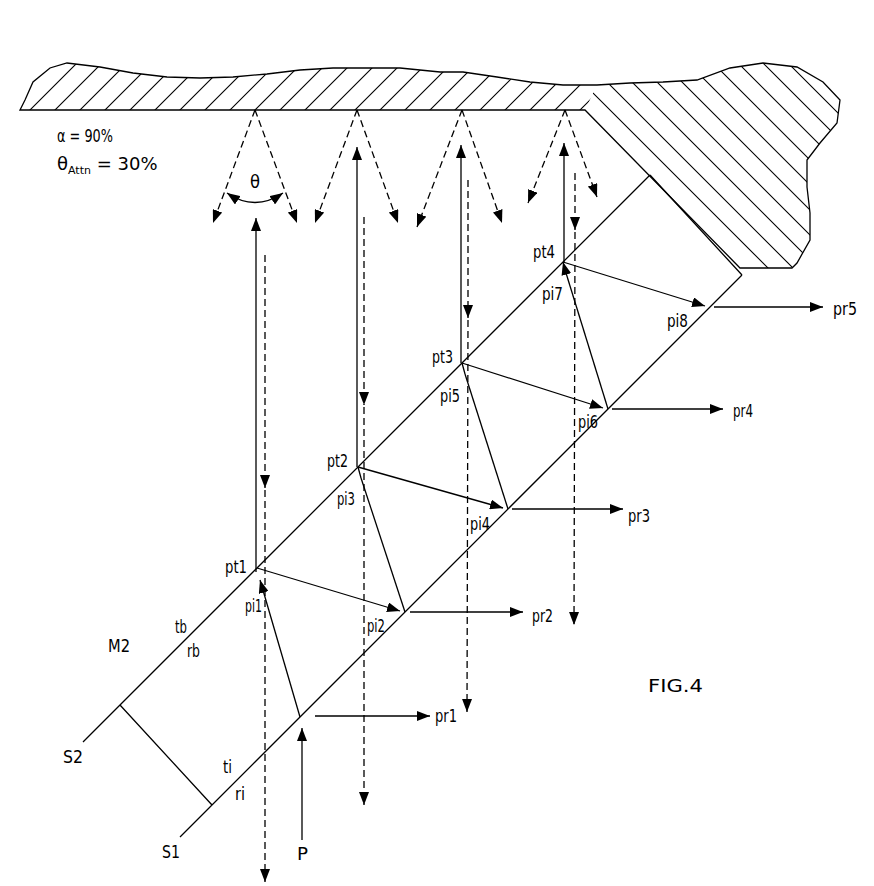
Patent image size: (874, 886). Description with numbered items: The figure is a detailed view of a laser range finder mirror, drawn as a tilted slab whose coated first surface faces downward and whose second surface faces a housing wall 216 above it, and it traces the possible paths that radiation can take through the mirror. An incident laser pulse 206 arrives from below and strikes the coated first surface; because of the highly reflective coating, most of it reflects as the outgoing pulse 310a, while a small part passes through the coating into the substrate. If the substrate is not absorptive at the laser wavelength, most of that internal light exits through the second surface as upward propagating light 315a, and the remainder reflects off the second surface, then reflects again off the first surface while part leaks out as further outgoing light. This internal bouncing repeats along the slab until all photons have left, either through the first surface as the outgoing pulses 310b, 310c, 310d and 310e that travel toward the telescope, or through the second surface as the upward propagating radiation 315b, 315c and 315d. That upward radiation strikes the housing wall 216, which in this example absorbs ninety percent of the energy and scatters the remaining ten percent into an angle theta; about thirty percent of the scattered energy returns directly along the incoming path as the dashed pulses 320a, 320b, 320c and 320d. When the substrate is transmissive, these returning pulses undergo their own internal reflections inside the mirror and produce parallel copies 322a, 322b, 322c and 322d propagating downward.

The housing wall 216 is at (645, 84).
The incident laser pulse 206 is at (303, 793).
The outgoing pulse 310a is at (373, 716).
The outgoing pulse 310b is at (482, 612).
The outgoing pulse 310c is at (583, 509).
The outgoing pulse 310d is at (653, 409).
The outgoing pulse 310e is at (748, 309).
The upward propagating light 315a is at (255, 450).
The upward propagating radiation 315b is at (357, 318).
The upward propagating radiation 315c is at (460, 235).
The upward propagating radiation 315d is at (563, 200).
The scattered pulse 320a is at (576, 205).
The scattered pulse 320b is at (468, 265).
The scattered pulse 320c is at (363, 362).
The scattered pulse 320d is at (265, 423).
The parallel copy 322a is at (265, 818).
The parallel copy 322b is at (365, 778).
The parallel copy 322c is at (467, 682).
The parallel copy 322d is at (575, 585).